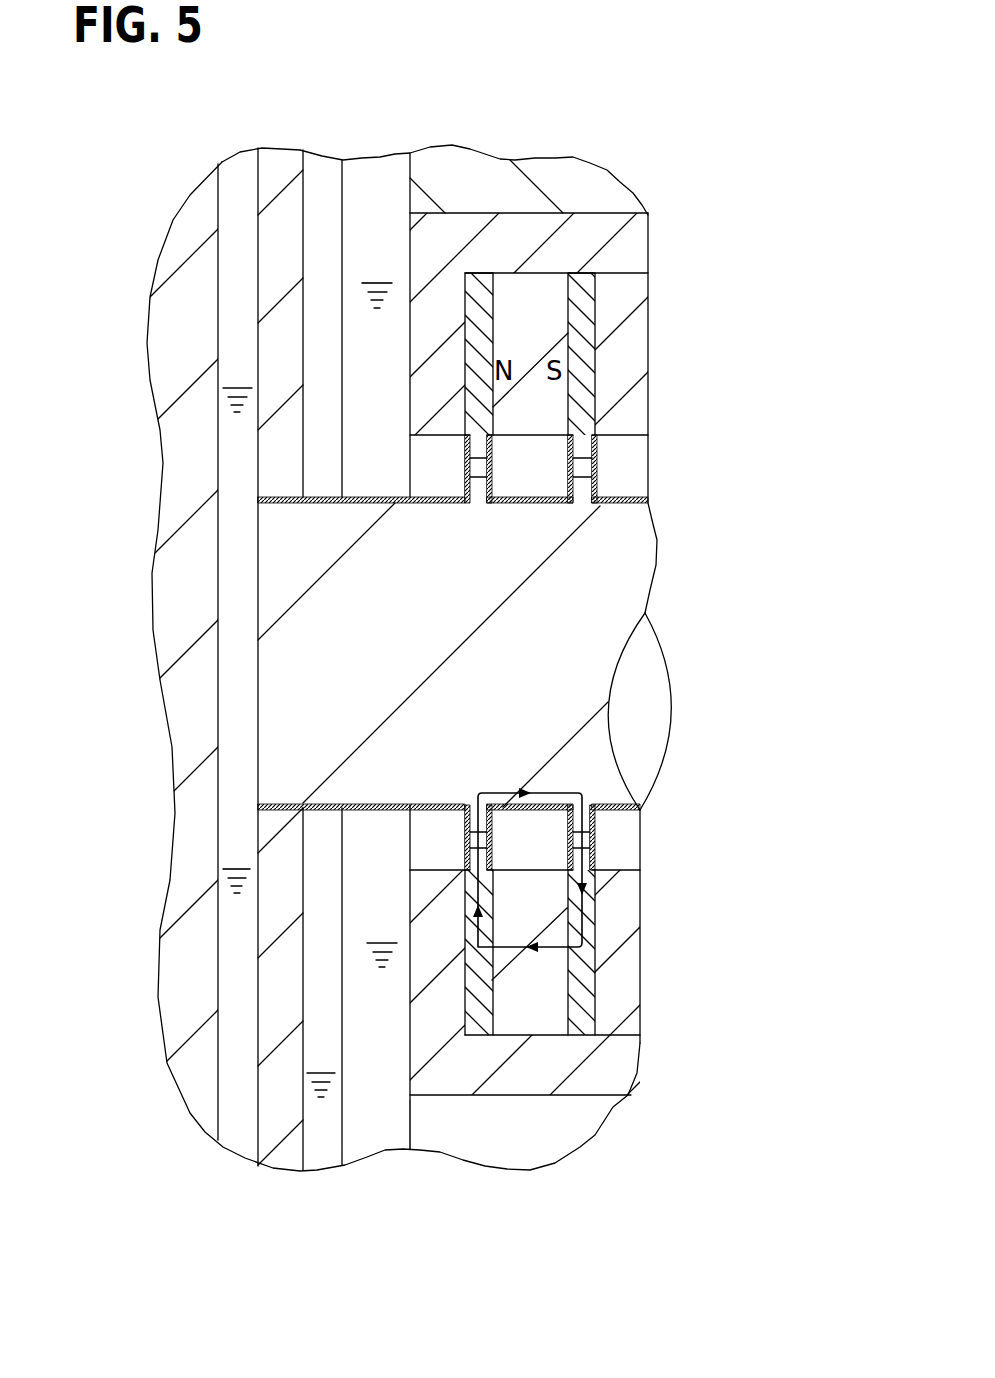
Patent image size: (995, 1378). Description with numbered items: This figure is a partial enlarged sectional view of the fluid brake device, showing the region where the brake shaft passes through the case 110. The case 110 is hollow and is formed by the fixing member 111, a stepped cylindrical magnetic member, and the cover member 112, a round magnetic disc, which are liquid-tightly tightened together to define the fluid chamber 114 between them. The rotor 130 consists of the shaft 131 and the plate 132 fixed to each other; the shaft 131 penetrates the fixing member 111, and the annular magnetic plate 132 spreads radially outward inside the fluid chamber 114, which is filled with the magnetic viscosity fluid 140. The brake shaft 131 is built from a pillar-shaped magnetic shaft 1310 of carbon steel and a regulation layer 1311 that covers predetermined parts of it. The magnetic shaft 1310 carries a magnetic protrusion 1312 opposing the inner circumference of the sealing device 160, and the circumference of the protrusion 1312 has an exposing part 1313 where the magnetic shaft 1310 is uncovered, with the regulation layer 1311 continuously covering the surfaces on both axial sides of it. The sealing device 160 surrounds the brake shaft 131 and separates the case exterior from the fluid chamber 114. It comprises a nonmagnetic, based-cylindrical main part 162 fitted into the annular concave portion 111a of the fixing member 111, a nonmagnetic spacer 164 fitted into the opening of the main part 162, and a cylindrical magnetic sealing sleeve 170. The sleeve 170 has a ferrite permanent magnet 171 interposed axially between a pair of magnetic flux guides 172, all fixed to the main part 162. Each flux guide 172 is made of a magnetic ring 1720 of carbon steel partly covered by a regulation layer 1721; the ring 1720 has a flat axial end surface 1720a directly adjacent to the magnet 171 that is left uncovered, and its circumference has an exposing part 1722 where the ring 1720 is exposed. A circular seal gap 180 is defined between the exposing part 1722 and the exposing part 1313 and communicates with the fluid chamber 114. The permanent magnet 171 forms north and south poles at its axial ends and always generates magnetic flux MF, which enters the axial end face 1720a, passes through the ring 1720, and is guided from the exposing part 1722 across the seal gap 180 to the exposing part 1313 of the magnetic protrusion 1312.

The case 110 is at (448, 63).
The fixing member 111 is at (469, 167).
The annular concave portion 111a is at (625, 213).
The cover member 112 is at (202, 195).
The fluid chamber 114 is at (409, 1110).
The rotor 130 is at (92, 1020).
The shaft 131 is at (262, 820).
The plate 132 is at (257, 910).
The magnetic viscosity fluid 140 is at (375, 953).
The sealing device 160 is at (636, 1100).
The main part 162 is at (452, 1078).
The spacer 164 is at (613, 1025).
The magnetic sealing sleeve 170 is at (638, 1268).
The permanent magnet 171 is at (532, 1018).
The magnetic flux guide 172 is at (477, 1022).
The seal gap 180 is at (585, 467).
The magnetic shaft 1310 is at (633, 550).
The regulation layer 1311 is at (595, 500).
The magnetic protrusion 1312 is at (592, 840).
The exposing part 1313 is at (592, 848).
The magnetic ring 1720 is at (585, 370).
The axial end surface 1720a is at (495, 298).
The regulation layer 1721 is at (596, 447).
The exposing part 1722 is at (593, 858).
The magnetic flux MF is at (584, 930).